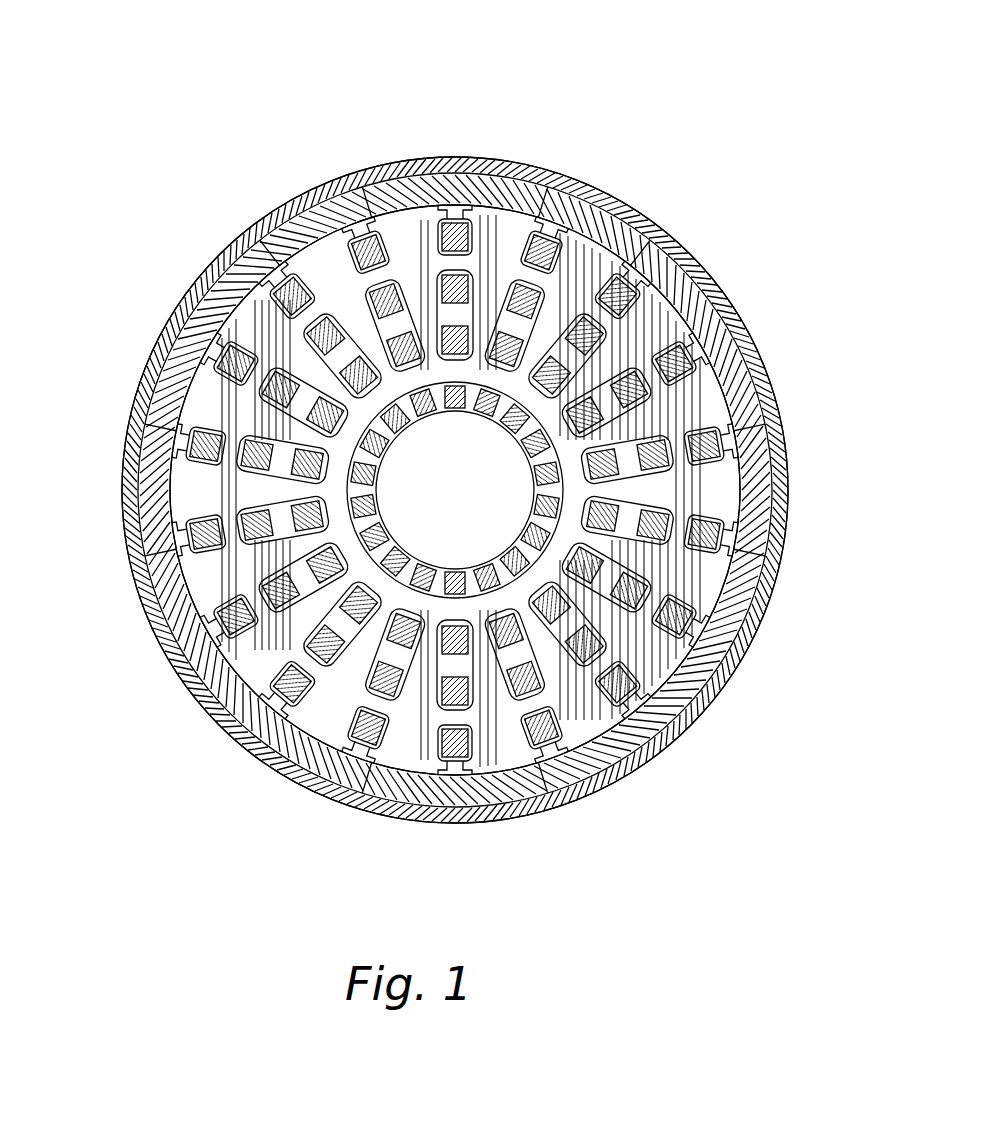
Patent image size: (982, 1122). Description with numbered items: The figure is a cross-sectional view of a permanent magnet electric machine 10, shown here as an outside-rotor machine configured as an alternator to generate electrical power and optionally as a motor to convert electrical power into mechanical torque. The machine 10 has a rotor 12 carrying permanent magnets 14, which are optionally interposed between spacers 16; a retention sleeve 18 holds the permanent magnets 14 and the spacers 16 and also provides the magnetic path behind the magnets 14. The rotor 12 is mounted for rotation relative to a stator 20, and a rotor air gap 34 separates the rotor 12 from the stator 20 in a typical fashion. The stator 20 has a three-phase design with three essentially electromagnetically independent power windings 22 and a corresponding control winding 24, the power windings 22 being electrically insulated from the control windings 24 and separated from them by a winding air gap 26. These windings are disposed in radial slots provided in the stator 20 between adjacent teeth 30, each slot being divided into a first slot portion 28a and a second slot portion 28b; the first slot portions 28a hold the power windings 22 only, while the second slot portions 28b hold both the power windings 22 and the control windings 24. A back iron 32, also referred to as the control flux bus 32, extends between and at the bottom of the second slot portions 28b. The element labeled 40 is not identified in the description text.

The permanent magnet electric machine 10 is at (176, 757).
The rotor 12 is at (592, 128).
The permanent magnets 14 is at (733, 307).
The spacers 16 is at (622, 238).
The retention sleeve 18 is at (613, 207).
The stator 20 is at (710, 403).
The power winding 22 is at (368, 295).
The control winding 24 is at (348, 455).
The winding air gap 26 is at (298, 405).
The first slot portion 28a is at (570, 725).
The second slot portion 28b is at (287, 490).
The teeth 30 is at (643, 565).
The back iron 32 is at (340, 537).
The rotor air gap 34 is at (700, 608).
The pole piece 40 is at (690, 515).